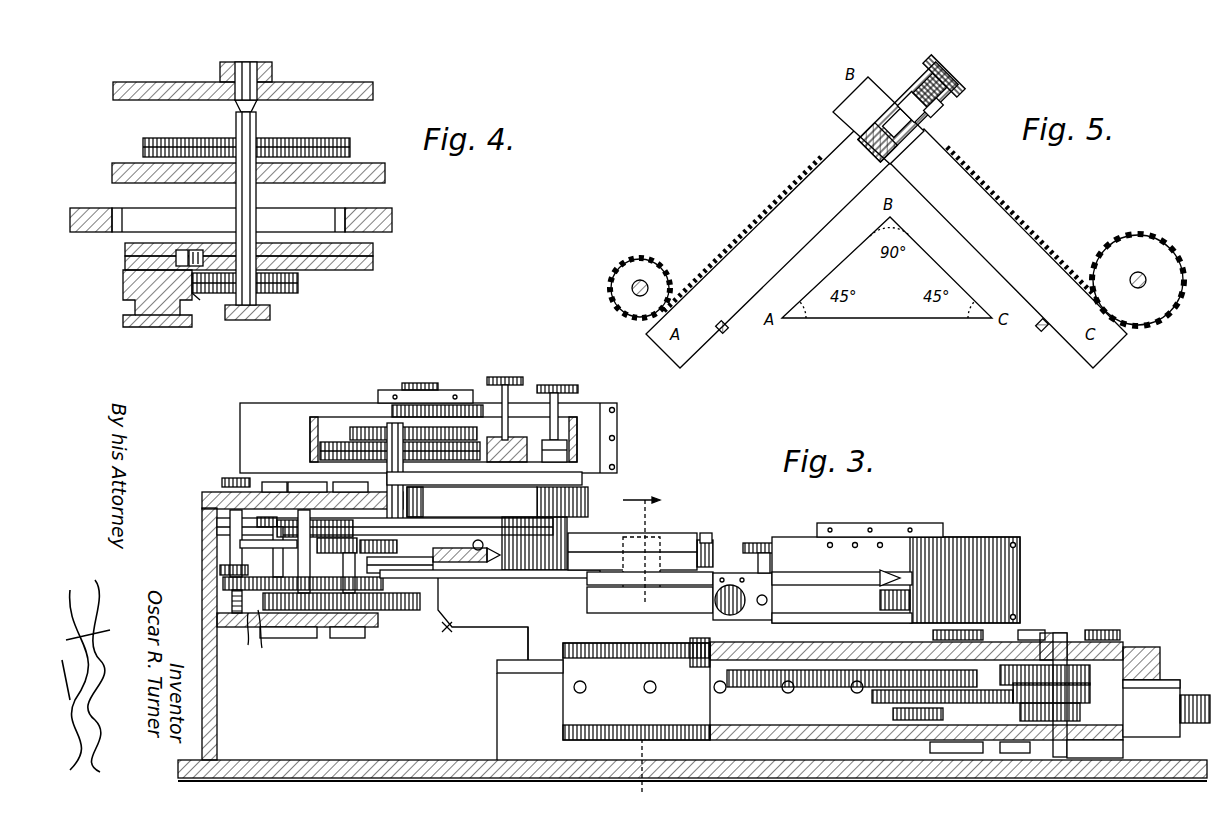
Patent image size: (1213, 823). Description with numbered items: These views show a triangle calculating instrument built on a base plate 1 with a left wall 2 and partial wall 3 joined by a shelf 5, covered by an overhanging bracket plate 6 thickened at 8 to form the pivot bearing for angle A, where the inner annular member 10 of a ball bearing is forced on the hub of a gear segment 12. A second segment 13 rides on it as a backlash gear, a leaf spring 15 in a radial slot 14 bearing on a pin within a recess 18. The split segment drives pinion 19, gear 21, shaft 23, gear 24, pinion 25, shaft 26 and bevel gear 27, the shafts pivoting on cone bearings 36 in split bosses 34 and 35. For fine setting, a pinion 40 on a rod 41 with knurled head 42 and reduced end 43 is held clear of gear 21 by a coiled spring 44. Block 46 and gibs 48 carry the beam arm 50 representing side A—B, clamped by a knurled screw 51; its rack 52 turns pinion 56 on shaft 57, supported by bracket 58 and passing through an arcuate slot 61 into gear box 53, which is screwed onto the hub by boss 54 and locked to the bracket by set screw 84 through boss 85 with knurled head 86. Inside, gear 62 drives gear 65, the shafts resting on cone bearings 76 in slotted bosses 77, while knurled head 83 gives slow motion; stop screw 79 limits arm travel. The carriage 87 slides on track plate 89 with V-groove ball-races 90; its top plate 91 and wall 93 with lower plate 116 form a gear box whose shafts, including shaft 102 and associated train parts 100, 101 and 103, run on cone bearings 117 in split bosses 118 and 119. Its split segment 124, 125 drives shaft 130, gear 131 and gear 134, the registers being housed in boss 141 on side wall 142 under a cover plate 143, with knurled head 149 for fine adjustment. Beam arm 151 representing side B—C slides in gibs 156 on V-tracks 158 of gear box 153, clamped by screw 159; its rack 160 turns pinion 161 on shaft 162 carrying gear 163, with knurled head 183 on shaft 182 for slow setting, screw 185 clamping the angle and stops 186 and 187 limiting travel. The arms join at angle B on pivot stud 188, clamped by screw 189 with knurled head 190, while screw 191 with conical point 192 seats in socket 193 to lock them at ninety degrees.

In FIG. 3, the base plate 1 is at (318, 760).
In FIG. 3, the wall 2 is at (217, 693).
In FIG. 3, the partial enclosing wall 3 is at (490, 615).
In FIG. 3, the shelf 5 is at (378, 627).
In FIG. 4, the bracket plate 6 is at (85, 208).
In FIG. 3, the bracket plate 6 is at (212, 492).
In FIG. 3, the thickened portion 8 is at (588, 492).
In FIG. 3, the inner annular member 10 is at (643, 641).
In FIG. 4, the gear segment 12 is at (373, 265).
In FIG. 3, the gear segment 12 is at (495, 525).
In FIG. 4, the second segment 13 is at (373, 247).
In FIG. 3, the second segment 13 is at (462, 520).
In FIG. 4, the radial slot 14 is at (123, 288).
In FIG. 4, the leaf spring 15 is at (195, 250).
In FIG. 4, the concave recess 18 is at (182, 250).
In FIG. 3, the pinion 19 is at (315, 545).
In FIG. 3, the gear 21 is at (223, 583).
In FIG. 3, the shaft 23 is at (343, 565).
In FIG. 3, the gear 24 is at (400, 610).
In FIG. 3, the pinion 25 is at (261, 641).
In FIG. 3, the shaft 26 is at (283, 560).
In FIG. 3, the bevel gear 27 is at (240, 544).
In FIG. 3, the split bosses 34 is at (300, 482).
In FIG. 3, the split bosses 35 is at (347, 638).
In FIG. 3, the cone bearing 36 is at (300, 638).
In FIG. 3, the pinion 40 is at (220, 570).
In FIG. 3, the shaft 41 is at (230, 522).
In FIG. 3, the knurled head 42 is at (240, 478).
In FIG. 3, the reduced lower end 43 is at (232, 600).
In FIG. 3, the coiled spring 44 is at (238, 635).
In FIG. 3, the slide block 46 is at (560, 535).
In FIG. 3, the gibs 48 is at (460, 562).
In FIG. 4, the beam arm 50 is at (165, 327).
In FIG. 5, the beam arm 50 is at (768, 248).
In FIG. 3, the beam arm 50 is at (610, 545).
In FIG. 3, the knurled headed screw 51 is at (506, 385).
In FIG. 4, the rack 52 is at (200, 300).
In FIG. 5, the rack 52 is at (786, 183).
In FIG. 4, the gear box 53 is at (358, 82).
In FIG. 3, the gear box 53 is at (580, 403).
In FIG. 3, the threaded boss 54 is at (548, 393).
In FIG. 4, the pinion 56 is at (298, 285).
In FIG. 5, the pinion 56 is at (645, 258).
In FIG. 3, the pinion 56 is at (390, 573).
In FIG. 4, the shaft 57 is at (256, 200).
In FIG. 5, the shaft 57 is at (646, 282).
In FIG. 3, the shaft 57 is at (390, 425).
In FIG. 4, the bracket 58 is at (262, 320).
In FIG. 4, the slot 61 is at (310, 212).
In FIG. 3, the slot 61 is at (476, 482).
In FIG. 4, the gear 62 is at (330, 138).
In FIG. 3, the gear 62 is at (400, 441).
In FIG. 3, the gear 65 is at (355, 427).
In FIG. 4, the cone bearings 76 is at (255, 104).
In FIG. 4, the slotted bosses 77 is at (272, 72).
In FIG. 5, the stop screw 79 is at (724, 334).
In FIG. 3, the stop screw 79 is at (483, 550).
In FIG. 3, the knurled head 83 is at (418, 383).
In FIG. 3, the set screw 84 is at (577, 425).
In FIG. 3, the boss 85 is at (567, 452).
In FIG. 3, the knurled head 86 is at (570, 385).
In FIG. 3, the carriage 87 is at (630, 658).
In FIG. 3, the carriage track plate 89 is at (520, 693).
In FIG. 3, the V-grooves 90 is at (530, 673).
In FIG. 3, the top plate 91 is at (700, 667).
In FIG. 3, the gear box wall 93 is at (718, 696).
In FIG. 3, the block 100 is at (1090, 740).
In FIG. 3, the shaft 101 is at (1067, 640).
In FIG. 3, the shaft 102 is at (1160, 680).
In FIG. 3, the gear train 103 is at (1035, 693).
In FIG. 3, the lower plate 116 is at (725, 725).
In FIG. 3, the cone bearings 117 is at (1050, 633).
In FIG. 3, the split bosses 118 is at (1015, 748).
In FIG. 3, the split bosses 119 is at (976, 635).
In FIG. 3, the gear segment 124 is at (790, 688).
In FIG. 3, the second segment 125 is at (740, 683).
In FIG. 3, the shaft 130 is at (940, 750).
In FIG. 3, the gear 131 is at (850, 696).
In FIG. 3, the gear 134 is at (893, 714).
In FIG. 3, the boss 141 is at (1151, 708).
In FIG. 3, the side wall 142 is at (1150, 647).
In FIG. 3, the knob 143 is at (1195, 723).
In FIG. 3, the knurled head 149 is at (1030, 630).
In FIG. 5, the beam arm 151 is at (960, 188).
In FIG. 3, the beam arm 151 is at (587, 600).
In FIG. 3, the gear box 153 is at (990, 540).
In FIG. 3, the gibs 156 is at (800, 575).
In FIG. 3, the V-shaped tracks 158 is at (587, 578).
In FIG. 3, the knurled headed screw 159 is at (728, 614).
In FIG. 5, the rack 160 is at (1020, 222).
In FIG. 5, the pinion 161 is at (1100, 250).
In FIG. 3, the pinion 161 is at (910, 598).
In FIG. 5, the shaft 162 is at (1140, 272).
In FIG. 3, the gear 163 is at (900, 578).
In FIG. 3, the shaft 182 is at (1105, 630).
In FIG. 3, the knurled head 183 is at (940, 523).
In FIG. 3, the clamping screw 185 is at (745, 550).
In FIG. 5, the stop 186 is at (1042, 333).
In FIG. 3, the stop 186 is at (762, 608).
In FIG. 5, the stop 187 is at (833, 120).
In FIG. 5, the pivot stud 188 is at (895, 95).
In FIG. 3, the pivot stud 188 is at (690, 540).
In FIG. 5, the clamping screw 189 is at (948, 118).
In FIG. 5, the knurled head 190 is at (950, 95).
In FIG. 3, the knurled head 190 is at (705, 540).
In FIG. 5, the locking screw 191 is at (940, 68).
In FIG. 3, the locking screw 191 is at (710, 535).
In FIG. 5, the conical point 192 is at (920, 140).
In FIG. 5, the socket 193 is at (865, 140).